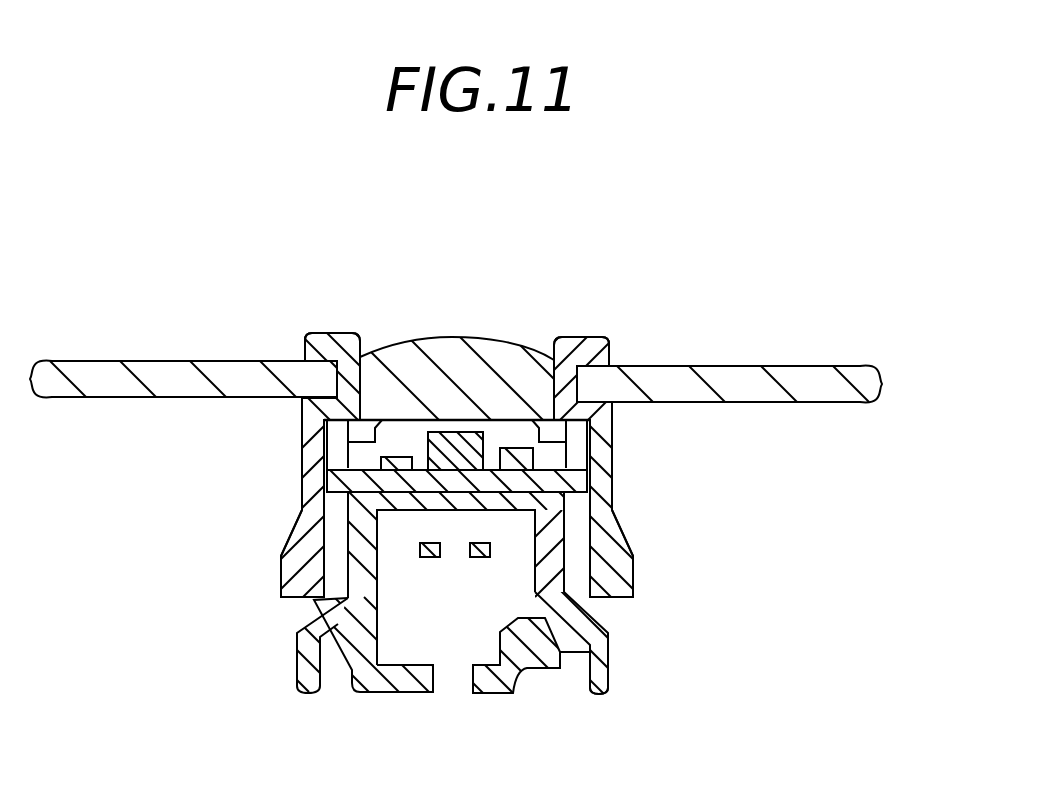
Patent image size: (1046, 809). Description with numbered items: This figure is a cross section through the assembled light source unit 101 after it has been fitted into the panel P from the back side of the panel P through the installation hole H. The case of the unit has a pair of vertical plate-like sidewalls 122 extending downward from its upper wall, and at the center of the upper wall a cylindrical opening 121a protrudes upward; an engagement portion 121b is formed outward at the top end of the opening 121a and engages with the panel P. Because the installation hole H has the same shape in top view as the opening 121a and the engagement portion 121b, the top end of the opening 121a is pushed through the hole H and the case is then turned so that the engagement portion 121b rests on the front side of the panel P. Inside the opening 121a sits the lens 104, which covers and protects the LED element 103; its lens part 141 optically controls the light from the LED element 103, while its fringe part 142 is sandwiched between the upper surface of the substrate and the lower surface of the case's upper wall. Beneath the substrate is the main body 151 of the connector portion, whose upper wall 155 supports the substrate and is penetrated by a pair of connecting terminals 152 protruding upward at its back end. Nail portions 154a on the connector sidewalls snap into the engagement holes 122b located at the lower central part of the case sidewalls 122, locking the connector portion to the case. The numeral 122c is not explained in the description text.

The light source unit 101 is at (686, 261).
The panel P is at (857, 378).
The opening 121a is at (314, 354).
The engagement portion 121b is at (313, 336).
The sidewall 122 is at (303, 438).
The engagement hole 122b is at (305, 599).
The housing flange 122c is at (288, 572).
The lens 104 is at (386, 352).
The lens part 141 is at (441, 340).
The LED element 103 is at (458, 436).
The installation hole H is at (556, 418).
The fringe part 142 is at (302, 465).
The main body 151 is at (360, 692).
The connecting terminal 152 is at (430, 559).
The nail portion 154a is at (314, 627).
The upper wall 155 is at (450, 512).